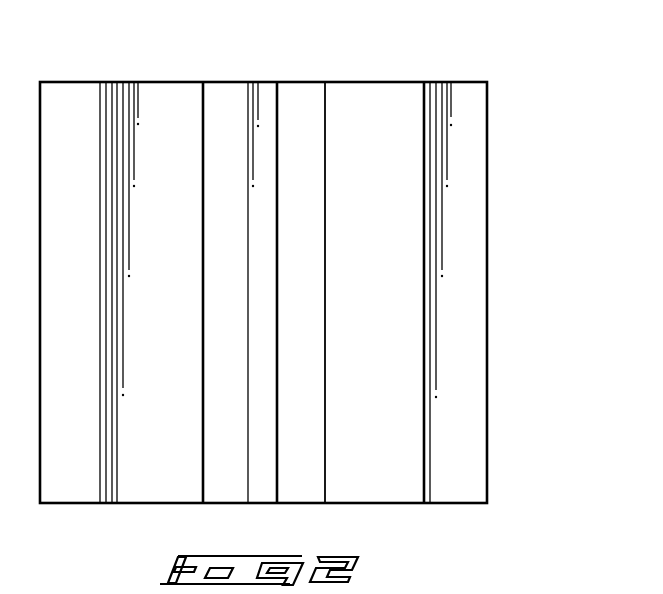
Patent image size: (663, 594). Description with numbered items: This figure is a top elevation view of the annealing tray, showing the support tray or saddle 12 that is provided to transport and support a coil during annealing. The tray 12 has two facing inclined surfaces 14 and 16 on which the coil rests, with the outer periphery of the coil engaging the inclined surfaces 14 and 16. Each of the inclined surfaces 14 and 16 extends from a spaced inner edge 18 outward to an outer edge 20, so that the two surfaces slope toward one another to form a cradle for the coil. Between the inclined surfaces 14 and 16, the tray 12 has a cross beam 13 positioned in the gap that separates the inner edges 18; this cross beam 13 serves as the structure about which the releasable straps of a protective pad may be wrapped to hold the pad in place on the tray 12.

The support tray 12 is at (531, 240).
The cross beam 13 is at (270, 236).
The inclined surface 14 is at (172, 242).
The inclined surface 16 is at (381, 242).
The inner edge 18 is at (203, 132).
The outer edge 20 is at (102, 150).